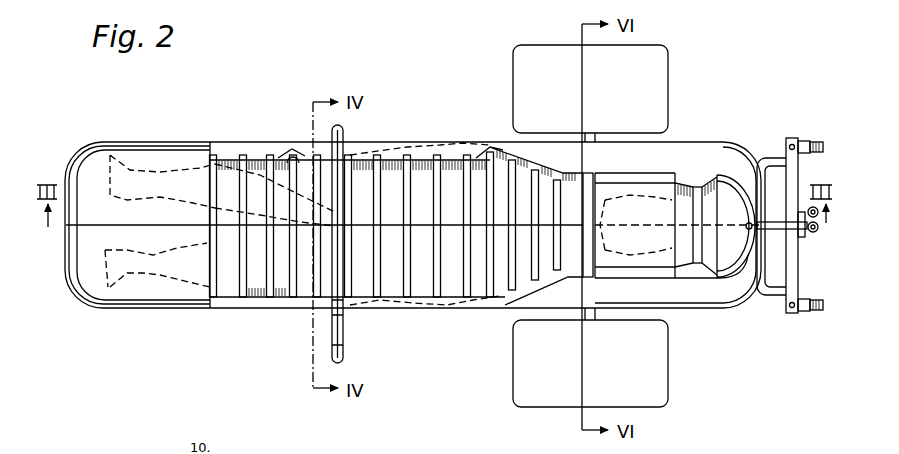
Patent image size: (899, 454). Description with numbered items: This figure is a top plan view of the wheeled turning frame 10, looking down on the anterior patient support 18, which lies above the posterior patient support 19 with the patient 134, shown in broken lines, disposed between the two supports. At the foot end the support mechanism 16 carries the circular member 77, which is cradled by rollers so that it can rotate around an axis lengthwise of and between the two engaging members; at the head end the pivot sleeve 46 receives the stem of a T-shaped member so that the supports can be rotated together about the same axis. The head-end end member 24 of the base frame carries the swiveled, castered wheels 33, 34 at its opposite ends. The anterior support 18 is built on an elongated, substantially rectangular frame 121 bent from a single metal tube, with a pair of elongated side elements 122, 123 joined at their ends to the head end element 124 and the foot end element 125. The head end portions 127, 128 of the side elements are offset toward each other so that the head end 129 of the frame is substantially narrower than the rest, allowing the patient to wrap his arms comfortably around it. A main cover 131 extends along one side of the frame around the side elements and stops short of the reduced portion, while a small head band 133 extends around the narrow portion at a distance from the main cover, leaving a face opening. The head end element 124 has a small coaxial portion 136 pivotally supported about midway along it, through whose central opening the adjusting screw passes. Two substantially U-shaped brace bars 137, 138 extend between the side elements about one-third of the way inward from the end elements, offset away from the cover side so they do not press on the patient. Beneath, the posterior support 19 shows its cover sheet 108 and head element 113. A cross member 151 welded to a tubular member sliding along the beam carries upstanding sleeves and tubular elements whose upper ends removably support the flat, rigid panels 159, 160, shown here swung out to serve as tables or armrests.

The turning frame 10 is at (198, 339).
The support mechanism 16 is at (346, 130).
The anterior patient support 18 is at (224, 138).
The posterior patient support 19 is at (691, 139).
The end member 24 is at (793, 290).
The wheel 33 is at (821, 141).
The wheel 34 is at (819, 311).
The pivot sleeve 46 is at (772, 231).
The circular member 77 is at (340, 212).
The cover sheet 108 is at (714, 300).
The head element 113 is at (757, 180).
The frame 121 is at (143, 138).
The side element 122 is at (100, 144).
The side element 123 is at (143, 307).
The head end element 124 is at (723, 188).
The end element 125 is at (70, 265).
The head end portion 127 is at (641, 152).
The head end portion 128 is at (645, 279).
The head end 129 is at (668, 286).
The main cover 131 is at (258, 302).
The head band 133 is at (695, 182).
The patient 134 is at (140, 274).
The coaxial portion 136 is at (712, 232).
The brace bar 137 is at (478, 160).
The brace bar 138 is at (284, 150).
The cross member 151 is at (593, 315).
The panel 159 is at (590, 93).
The panel 160 is at (590, 363).